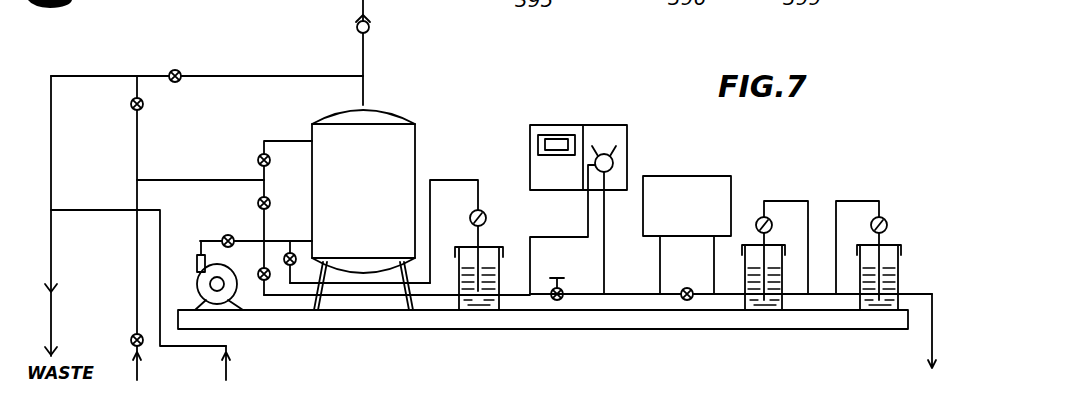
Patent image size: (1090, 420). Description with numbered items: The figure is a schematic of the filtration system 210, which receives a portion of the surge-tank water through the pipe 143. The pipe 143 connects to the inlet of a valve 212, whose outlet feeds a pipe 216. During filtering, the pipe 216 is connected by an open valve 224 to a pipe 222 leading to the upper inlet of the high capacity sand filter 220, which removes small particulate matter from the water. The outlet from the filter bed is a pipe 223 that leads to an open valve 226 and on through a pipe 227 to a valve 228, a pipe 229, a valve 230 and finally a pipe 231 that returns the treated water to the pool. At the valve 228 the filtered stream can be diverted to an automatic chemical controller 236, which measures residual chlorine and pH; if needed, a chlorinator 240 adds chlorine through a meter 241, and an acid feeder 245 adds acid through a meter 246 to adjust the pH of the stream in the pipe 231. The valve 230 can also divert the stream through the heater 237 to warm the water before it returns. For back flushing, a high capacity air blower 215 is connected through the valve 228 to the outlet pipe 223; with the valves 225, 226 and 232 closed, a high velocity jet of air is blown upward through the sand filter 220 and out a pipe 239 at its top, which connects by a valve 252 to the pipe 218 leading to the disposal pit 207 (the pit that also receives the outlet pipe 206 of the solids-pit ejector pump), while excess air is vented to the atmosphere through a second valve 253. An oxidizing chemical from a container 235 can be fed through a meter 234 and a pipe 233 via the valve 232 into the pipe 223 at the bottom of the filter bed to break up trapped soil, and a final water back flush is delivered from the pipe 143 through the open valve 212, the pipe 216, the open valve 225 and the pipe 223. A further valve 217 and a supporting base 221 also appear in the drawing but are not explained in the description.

The pipe 143 is at (138, 372).
The outlet pipe 206 is at (226, 372).
The disposal pit 207 is at (55, 292).
The filtration system 210 is at (573, 89).
The valve 212 is at (132, 338).
The high capacity air blower 215 is at (198, 286).
The pipe 216 is at (172, 180).
The valve 217 is at (144, 104).
The pipe 218 is at (77, 75).
The high capacity sand filter 220 is at (419, 118).
The platform base 221 is at (358, 324).
The pipe 222 is at (283, 141).
The pipe 223 is at (298, 241).
The valve 224 is at (259, 156).
The valve 225 is at (257, 203).
The valve 226 is at (263, 281).
The pipe 227 is at (546, 236).
The valve 228 is at (223, 237).
The pipe 229 is at (636, 342).
The valve 230 is at (690, 300).
The pipe 231 is at (714, 262).
The valve 232 is at (285, 254).
The pipe 233 is at (296, 284).
The meter 234 is at (471, 213).
The container 235 is at (500, 300).
The automatic chemical controller 236 is at (598, 125).
The heater 237 is at (683, 176).
The pipe 239 is at (365, 62).
The chlorinator 240 is at (742, 266).
The meter 241 is at (770, 220).
The acid feeder 245 is at (902, 264).
The meter 246 is at (887, 219).
The valve 252 is at (181, 71).
The second valve 253 is at (370, 26).